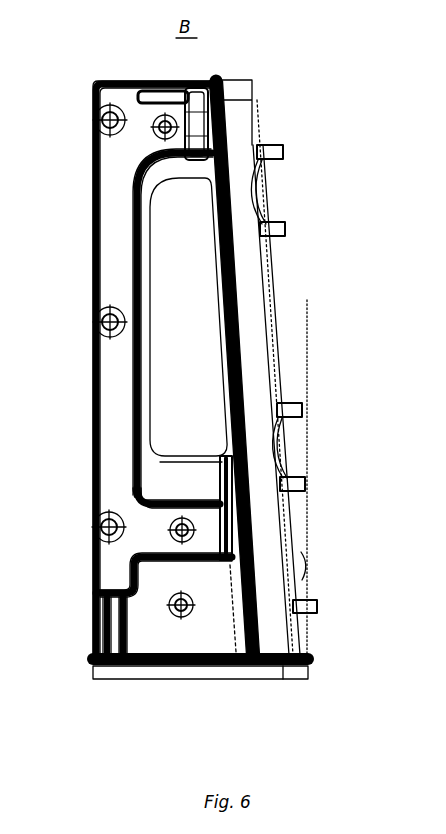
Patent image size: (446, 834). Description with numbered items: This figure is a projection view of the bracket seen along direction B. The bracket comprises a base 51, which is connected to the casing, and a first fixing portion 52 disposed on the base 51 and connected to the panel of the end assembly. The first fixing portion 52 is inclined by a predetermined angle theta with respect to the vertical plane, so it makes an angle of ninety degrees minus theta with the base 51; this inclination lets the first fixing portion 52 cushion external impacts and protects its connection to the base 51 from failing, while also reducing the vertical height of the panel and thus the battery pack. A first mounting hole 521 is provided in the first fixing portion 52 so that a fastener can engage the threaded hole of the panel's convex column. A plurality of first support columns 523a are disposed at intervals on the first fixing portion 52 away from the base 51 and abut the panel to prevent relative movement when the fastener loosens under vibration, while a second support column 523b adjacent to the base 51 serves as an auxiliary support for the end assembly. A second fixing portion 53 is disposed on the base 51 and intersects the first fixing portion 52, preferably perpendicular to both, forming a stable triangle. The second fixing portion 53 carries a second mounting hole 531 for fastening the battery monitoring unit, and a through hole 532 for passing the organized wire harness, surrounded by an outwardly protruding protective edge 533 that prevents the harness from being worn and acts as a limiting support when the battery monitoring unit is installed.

The base 51 is at (218, 670).
The first fixing portion 52 is at (262, 300).
The first mounting hole 521 is at (212, 140).
The first support column 523a is at (283, 152).
The second support column 523b is at (317, 608).
The second fixing portion 53 is at (113, 198).
The second mounting hole 531 is at (96, 314).
The through hole 532 is at (146, 455).
The protective edge 533 is at (137, 263).